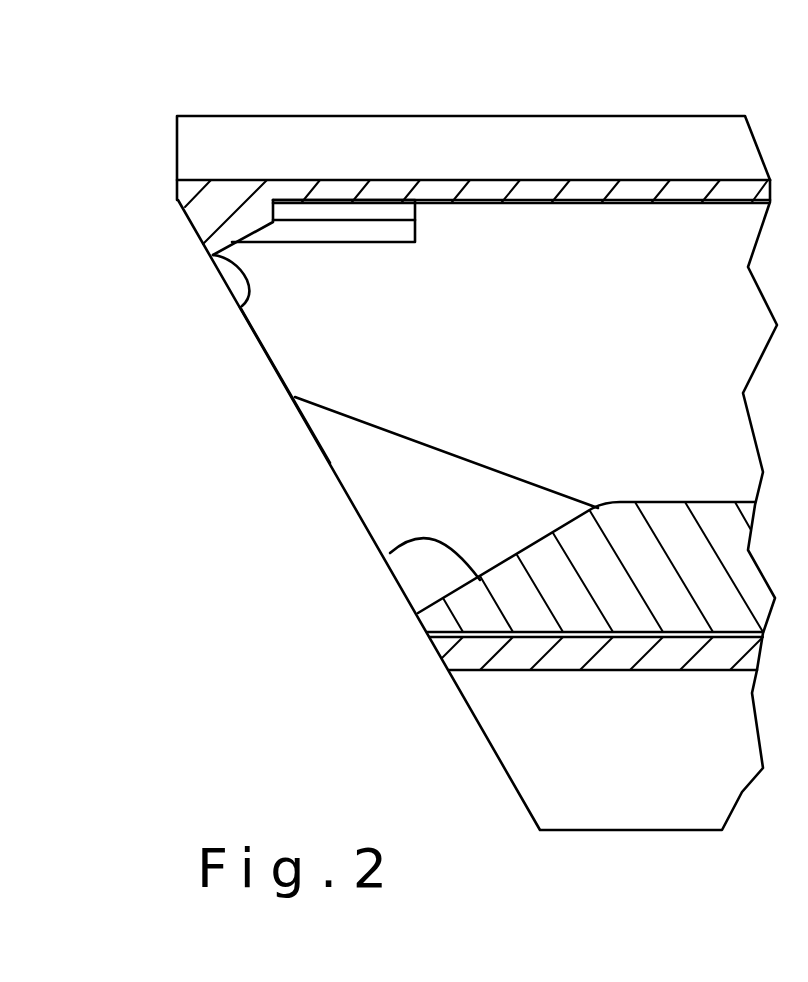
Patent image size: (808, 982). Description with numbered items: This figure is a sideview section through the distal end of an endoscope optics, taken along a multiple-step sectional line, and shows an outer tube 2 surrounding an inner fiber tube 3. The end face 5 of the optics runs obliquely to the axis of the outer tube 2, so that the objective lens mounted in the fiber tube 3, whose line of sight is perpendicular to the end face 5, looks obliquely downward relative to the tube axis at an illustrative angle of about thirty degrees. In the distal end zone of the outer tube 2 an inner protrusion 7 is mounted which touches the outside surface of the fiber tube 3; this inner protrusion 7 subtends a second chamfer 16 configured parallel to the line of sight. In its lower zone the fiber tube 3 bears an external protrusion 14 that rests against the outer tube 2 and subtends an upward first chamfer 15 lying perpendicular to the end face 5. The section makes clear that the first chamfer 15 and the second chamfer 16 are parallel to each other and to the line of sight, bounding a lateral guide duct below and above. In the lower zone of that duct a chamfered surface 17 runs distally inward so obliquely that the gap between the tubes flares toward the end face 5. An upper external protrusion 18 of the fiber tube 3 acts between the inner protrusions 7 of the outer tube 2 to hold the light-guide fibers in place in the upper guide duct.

The outer tube 2 is at (528, 190).
The fiber tube 3 is at (675, 233).
The end face 5 is at (271, 363).
The inner protrusions 7 is at (210, 208).
The external protrusion 14 is at (612, 612).
The first chamfer 15 is at (390, 553).
The second chamfers 16 is at (242, 306).
The chamfered surfaces 17 is at (373, 468).
The upper external protrusion 18 is at (335, 230).